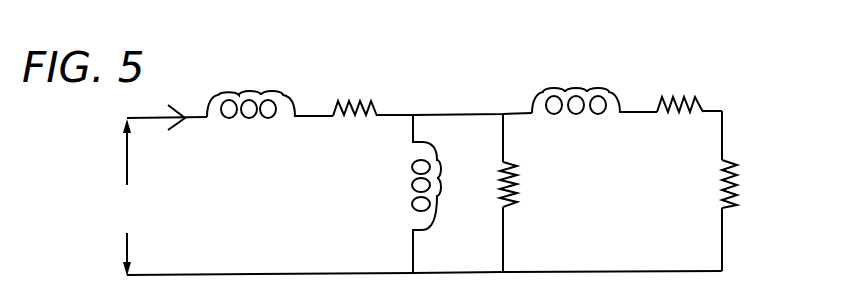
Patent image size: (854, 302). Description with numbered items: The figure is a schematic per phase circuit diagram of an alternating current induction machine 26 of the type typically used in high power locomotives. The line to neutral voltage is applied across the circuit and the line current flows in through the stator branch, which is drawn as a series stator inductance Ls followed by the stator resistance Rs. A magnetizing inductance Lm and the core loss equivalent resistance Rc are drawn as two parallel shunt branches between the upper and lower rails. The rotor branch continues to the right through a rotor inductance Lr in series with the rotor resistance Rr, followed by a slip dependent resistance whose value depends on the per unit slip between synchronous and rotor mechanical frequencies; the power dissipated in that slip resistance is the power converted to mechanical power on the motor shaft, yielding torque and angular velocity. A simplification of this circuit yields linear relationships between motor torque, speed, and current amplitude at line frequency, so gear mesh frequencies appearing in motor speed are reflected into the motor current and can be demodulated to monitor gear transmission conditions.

The induction motor equivalent circuit 26 is at (718, 81).
The stator leakage inductance Ls is at (251, 120).
The stator resistance Rs is at (355, 125).
The magnetizing inductance Lm is at (440, 194).
The core loss equivalent resistance Rc is at (525, 193).
The rotor leakage inductance Lr is at (576, 118).
The rotor resistance Rr is at (680, 121).